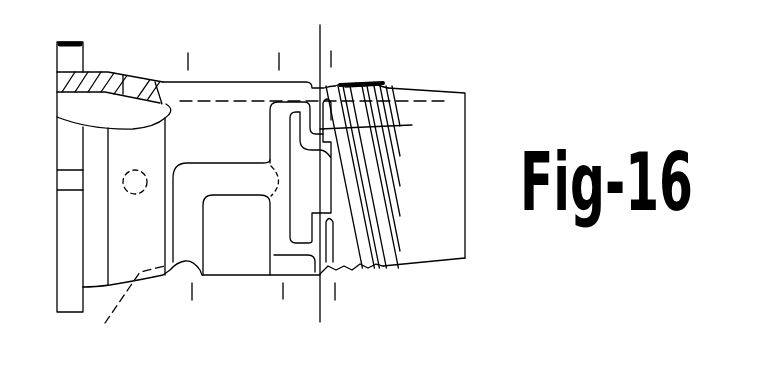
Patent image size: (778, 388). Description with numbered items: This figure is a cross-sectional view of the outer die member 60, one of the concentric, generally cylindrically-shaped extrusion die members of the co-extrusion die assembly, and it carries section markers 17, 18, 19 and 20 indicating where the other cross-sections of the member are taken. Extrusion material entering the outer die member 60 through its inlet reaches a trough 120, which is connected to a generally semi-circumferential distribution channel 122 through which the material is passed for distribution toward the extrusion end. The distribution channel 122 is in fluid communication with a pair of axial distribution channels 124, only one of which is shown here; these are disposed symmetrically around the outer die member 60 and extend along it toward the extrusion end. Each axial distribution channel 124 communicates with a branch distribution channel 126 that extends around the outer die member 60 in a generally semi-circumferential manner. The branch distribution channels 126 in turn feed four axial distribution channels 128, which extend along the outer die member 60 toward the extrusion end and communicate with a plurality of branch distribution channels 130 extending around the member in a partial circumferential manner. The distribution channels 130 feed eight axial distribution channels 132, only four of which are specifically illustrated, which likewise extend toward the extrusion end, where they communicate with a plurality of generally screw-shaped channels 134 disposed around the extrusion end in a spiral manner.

The outer die member 60 is at (208, 82).
The trough 120 is at (105, 196).
The distribution channel 122 is at (194, 276).
The axial distribution channel 124 is at (223, 181).
The branch distribution channel 126 is at (271, 110).
The axial distribution channel 128 is at (328, 161).
The branch distribution channel 130 is at (442, 117).
The axial distribution channel 132 is at (370, 85).
The screw-shaped channel 134 is at (370, 86).
The section line 17- 17 is at (318, 33).
The section line 18- 18 is at (360, 60).
The section line 19- 19 is at (270, 61).
The section line 20- 20 is at (179, 62).